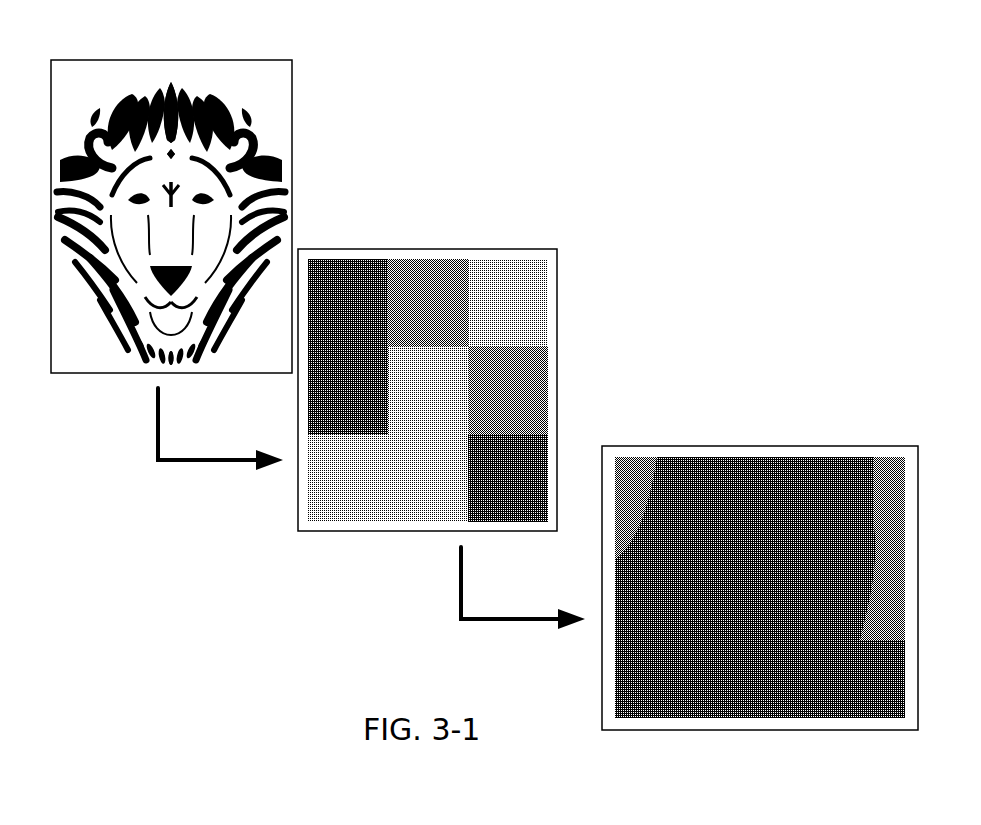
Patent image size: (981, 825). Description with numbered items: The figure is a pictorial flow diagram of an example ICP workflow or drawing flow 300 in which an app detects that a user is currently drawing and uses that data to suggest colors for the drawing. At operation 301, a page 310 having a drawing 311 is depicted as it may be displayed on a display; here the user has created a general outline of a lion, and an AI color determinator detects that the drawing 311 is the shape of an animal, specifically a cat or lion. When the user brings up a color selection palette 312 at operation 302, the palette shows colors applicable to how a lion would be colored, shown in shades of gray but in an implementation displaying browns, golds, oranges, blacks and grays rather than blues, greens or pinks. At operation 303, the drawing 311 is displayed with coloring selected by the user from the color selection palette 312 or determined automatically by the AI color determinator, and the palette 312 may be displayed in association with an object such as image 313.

The ICP workflow or drawing flow 300 is at (803, 35).
The operation 301 is at (105, 58).
The operation 302 is at (390, 242).
The operation 303 is at (680, 440).
The page 310 is at (293, 81).
The drawing 311 is at (208, 99).
The color selection palette 312 is at (552, 297).
The image 313 is at (825, 455).